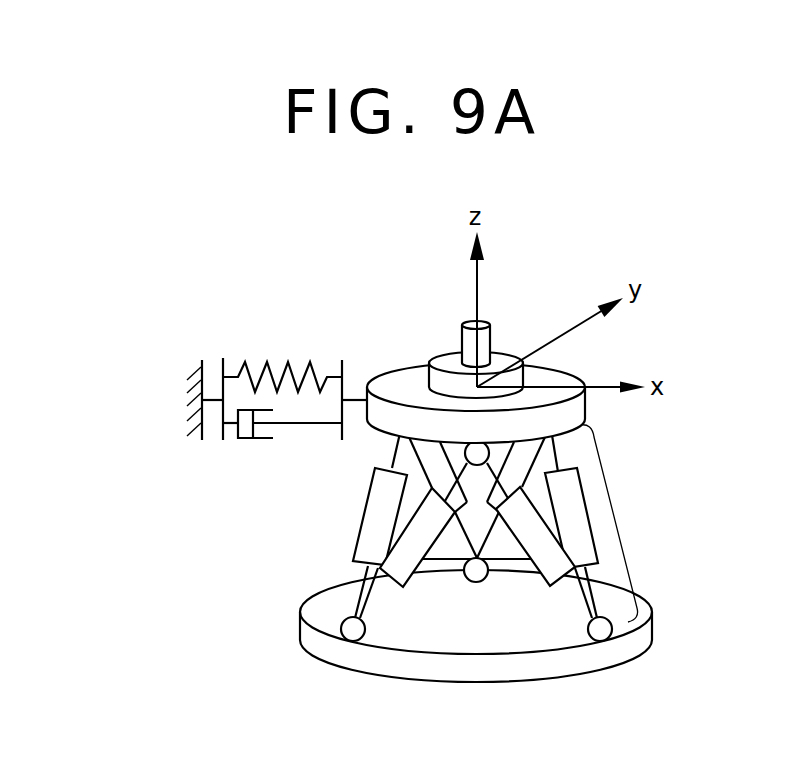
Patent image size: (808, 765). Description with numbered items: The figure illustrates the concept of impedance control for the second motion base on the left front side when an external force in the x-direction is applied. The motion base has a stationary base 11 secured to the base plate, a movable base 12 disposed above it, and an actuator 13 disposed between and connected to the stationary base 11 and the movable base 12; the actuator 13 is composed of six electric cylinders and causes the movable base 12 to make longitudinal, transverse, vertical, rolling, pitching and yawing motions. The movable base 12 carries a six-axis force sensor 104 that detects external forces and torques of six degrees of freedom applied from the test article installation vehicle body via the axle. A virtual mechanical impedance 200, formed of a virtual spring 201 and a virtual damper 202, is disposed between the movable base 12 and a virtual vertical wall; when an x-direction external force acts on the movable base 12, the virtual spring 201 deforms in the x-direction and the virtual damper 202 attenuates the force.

The virtual mechanical impedance 200 is at (253, 348).
The virtual spring 201 is at (298, 370).
The virtual damper 202 is at (258, 442).
The six-axis force sensor 104 is at (450, 363).
The movable base 12 is at (587, 407).
The actuator 13 is at (612, 506).
The stationary base 11 is at (653, 620).